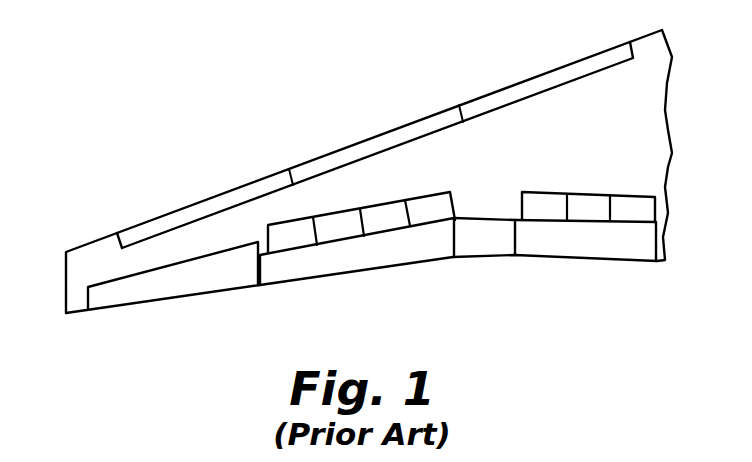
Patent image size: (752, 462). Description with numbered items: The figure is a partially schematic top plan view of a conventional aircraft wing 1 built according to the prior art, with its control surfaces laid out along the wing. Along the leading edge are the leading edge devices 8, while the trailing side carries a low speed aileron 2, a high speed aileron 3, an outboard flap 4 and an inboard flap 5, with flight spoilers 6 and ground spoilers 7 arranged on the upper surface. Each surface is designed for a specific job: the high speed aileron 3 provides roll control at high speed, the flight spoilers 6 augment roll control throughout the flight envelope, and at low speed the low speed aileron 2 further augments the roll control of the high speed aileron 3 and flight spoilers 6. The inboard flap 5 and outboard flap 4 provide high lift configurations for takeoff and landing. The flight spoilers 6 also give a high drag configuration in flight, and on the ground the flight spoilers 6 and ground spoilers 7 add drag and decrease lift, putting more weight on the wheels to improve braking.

The aircraft wing 1 is at (222, 92).
The low speed aileron 2 is at (160, 290).
The high speed aileron 3 is at (488, 242).
The outboard flap 4 is at (368, 258).
The inboard flap 5 is at (597, 247).
The flight spoilers 6 is at (300, 223).
The ground spoilers 7 is at (548, 200).
The leading edge devices 8 is at (197, 207).